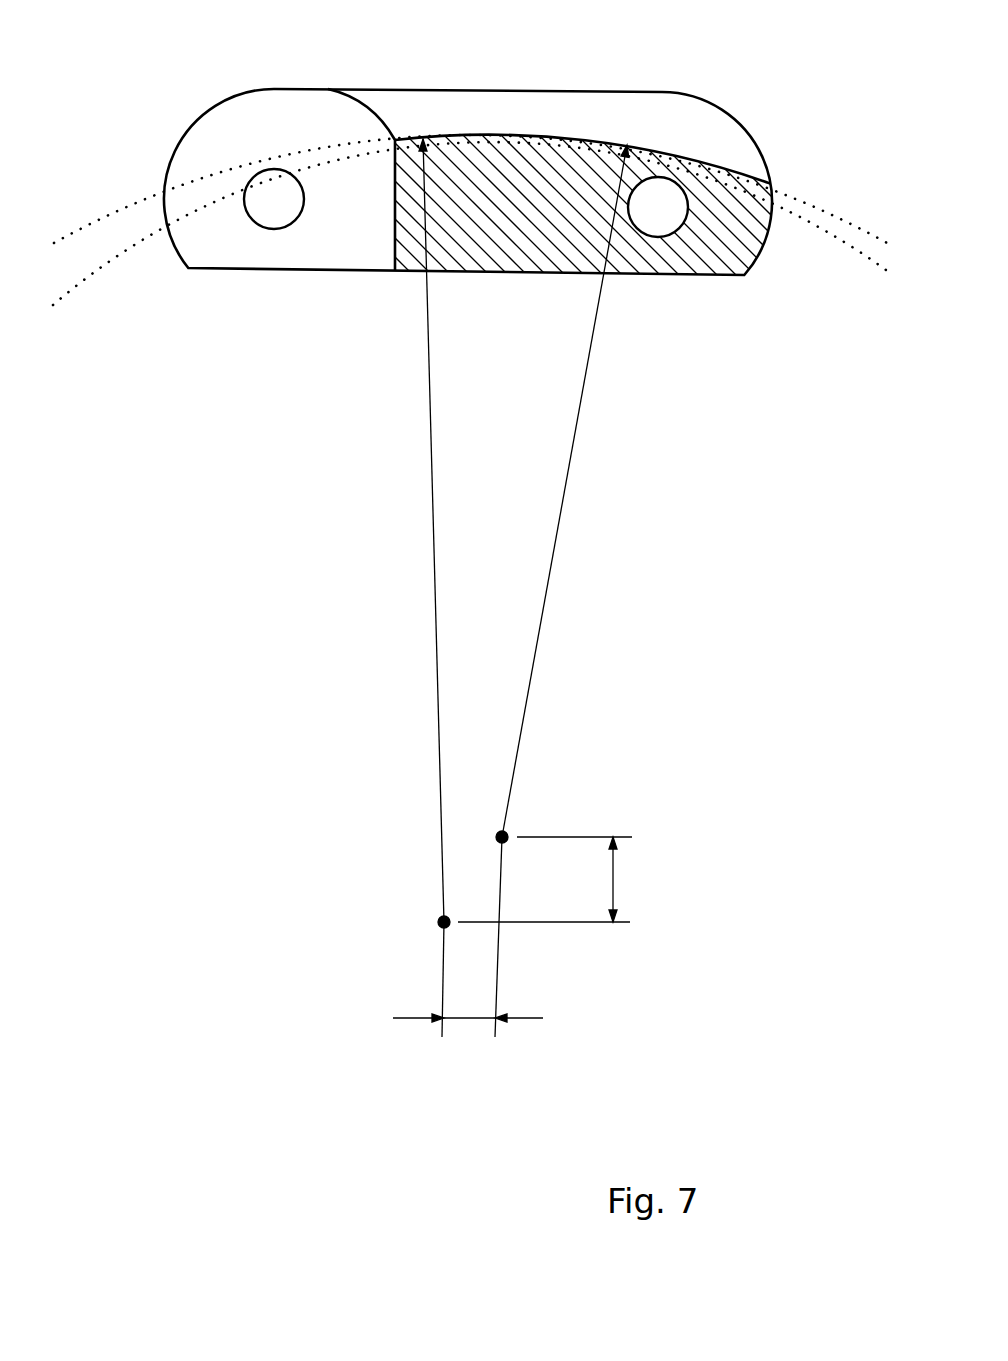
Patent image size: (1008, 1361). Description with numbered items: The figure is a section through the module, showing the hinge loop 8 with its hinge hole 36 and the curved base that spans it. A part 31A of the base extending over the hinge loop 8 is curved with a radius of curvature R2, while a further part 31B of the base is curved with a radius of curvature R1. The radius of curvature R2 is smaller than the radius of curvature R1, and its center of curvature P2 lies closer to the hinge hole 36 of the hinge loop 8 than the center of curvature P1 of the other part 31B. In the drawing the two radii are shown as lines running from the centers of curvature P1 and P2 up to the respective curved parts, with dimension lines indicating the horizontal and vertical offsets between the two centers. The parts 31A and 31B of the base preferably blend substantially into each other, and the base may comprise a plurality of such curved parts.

The hinge loop 8 is at (758, 257).
The part of the base 31A is at (707, 159).
The further part of the base 31B is at (411, 137).
The hinge hole 36 is at (668, 238).
The radius of curvature R1 is at (412, 530).
The radius of curvature R2 is at (565, 491).
The center of curvature P1 is at (511, 965).
The center of curvature P2 is at (563, 920).